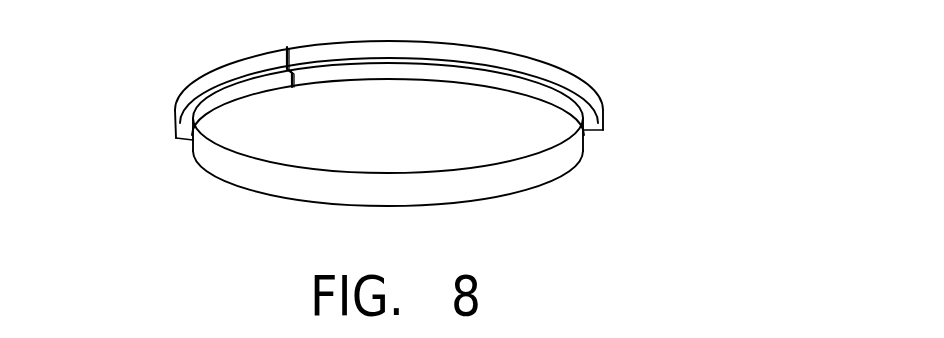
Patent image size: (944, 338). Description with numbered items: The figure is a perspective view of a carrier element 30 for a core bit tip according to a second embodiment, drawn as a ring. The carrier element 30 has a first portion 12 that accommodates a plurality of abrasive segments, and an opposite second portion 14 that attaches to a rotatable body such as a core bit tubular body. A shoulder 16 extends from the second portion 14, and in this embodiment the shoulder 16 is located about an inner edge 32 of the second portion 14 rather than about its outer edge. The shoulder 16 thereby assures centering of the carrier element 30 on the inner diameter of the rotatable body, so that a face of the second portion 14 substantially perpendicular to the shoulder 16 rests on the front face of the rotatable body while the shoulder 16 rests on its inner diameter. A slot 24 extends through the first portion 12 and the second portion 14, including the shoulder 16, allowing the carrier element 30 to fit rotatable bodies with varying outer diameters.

The first portion 12 is at (540, 62).
The second portion 14 is at (178, 140).
The shoulder 16 is at (210, 168).
The slot 24 is at (287, 47).
The carrier element 30 is at (70, 47).
The inner edge 32 is at (603, 130).